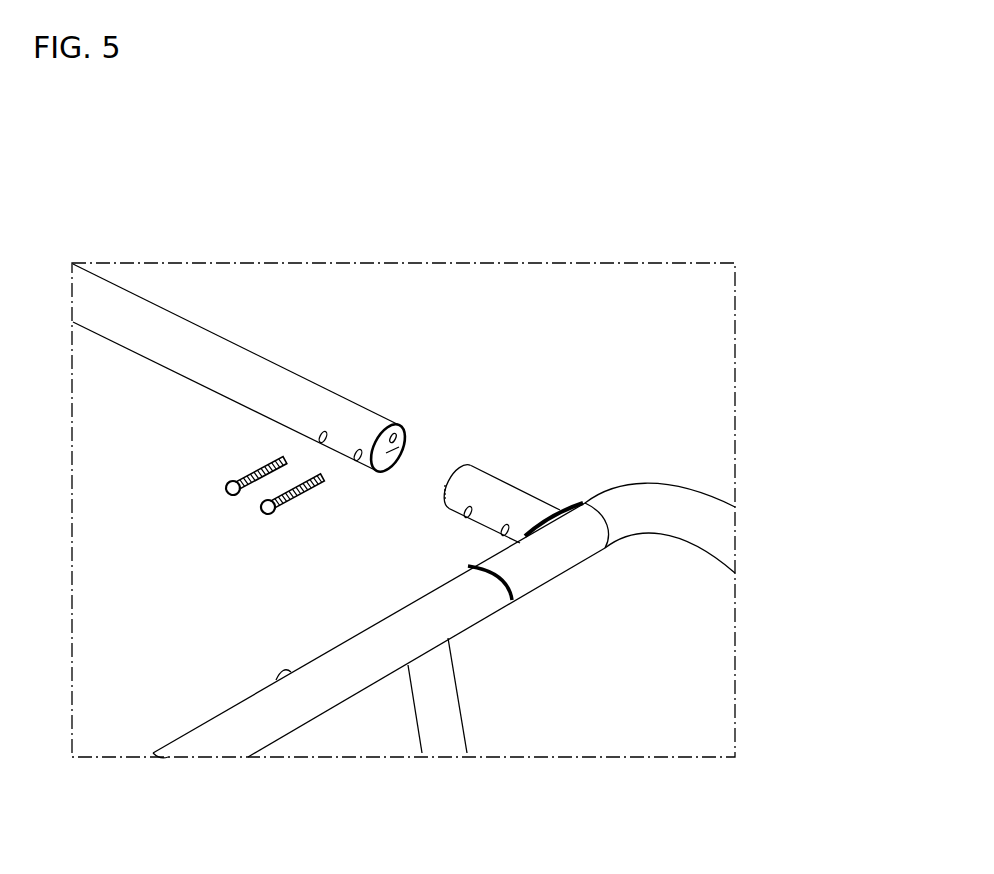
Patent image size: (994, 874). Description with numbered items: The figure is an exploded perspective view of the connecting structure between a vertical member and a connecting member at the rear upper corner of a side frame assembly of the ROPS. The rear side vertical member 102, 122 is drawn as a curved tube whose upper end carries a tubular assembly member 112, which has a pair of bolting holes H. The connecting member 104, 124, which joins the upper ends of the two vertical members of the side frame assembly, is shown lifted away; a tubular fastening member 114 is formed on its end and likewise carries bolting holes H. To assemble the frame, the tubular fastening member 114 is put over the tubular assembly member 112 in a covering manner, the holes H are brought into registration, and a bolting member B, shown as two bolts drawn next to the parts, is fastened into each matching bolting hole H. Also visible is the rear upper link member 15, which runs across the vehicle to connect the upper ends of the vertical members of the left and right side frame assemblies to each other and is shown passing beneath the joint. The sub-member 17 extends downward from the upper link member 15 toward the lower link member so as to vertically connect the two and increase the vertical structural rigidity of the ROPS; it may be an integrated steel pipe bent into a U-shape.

The connecting member 104 is at (276, 335).
The connecting member 124 is at (276, 335).
The tubular fastening member 114 is at (418, 443).
The bolting hole H is at (357, 448).
The bolting member B is at (253, 488).
The tubular assembly member 112 is at (532, 507).
The upper link member 15 is at (322, 690).
The rear side vertical member 102 is at (721, 493).
The rear side vertical member 122 is at (685, 507).
The sub-member 17 is at (442, 695).